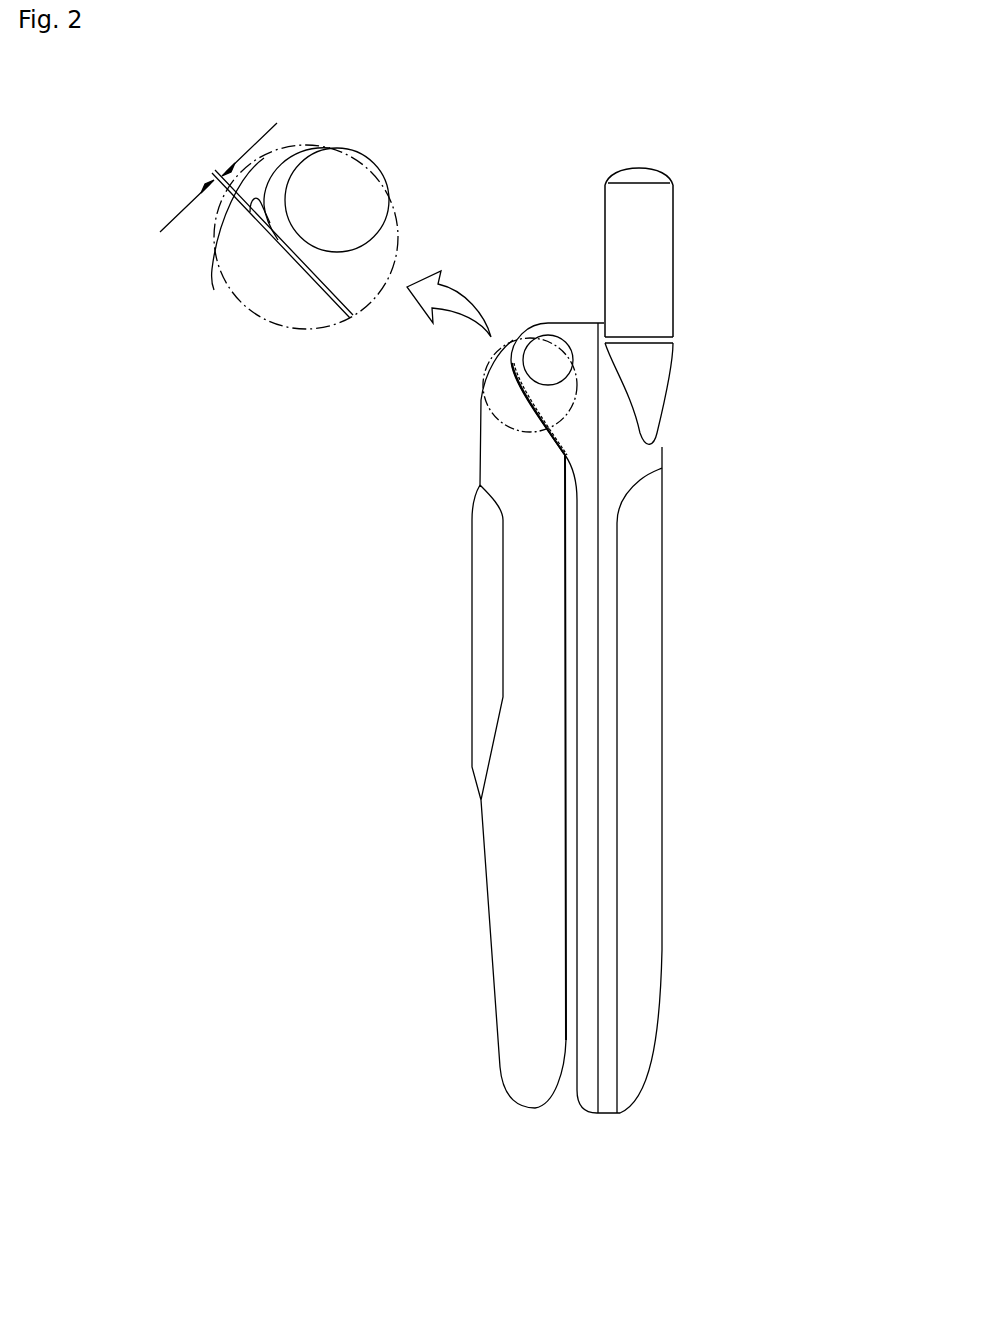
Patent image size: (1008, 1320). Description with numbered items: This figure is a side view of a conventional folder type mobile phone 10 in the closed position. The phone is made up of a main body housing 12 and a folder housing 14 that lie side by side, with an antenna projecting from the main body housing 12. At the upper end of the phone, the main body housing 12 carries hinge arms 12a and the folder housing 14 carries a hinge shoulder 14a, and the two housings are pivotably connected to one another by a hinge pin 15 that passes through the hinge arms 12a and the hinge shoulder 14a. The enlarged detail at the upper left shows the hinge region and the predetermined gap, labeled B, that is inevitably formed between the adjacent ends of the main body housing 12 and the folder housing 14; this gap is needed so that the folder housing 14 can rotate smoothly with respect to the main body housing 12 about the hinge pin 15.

The folder type mobile phone 10 is at (770, 348).
The main body housing 12 is at (622, 463).
The hinge arms 12a is at (575, 332).
The folder housing 14 is at (515, 533).
The hinge shoulder 14a is at (503, 397).
The hinge pin 15 is at (550, 360).